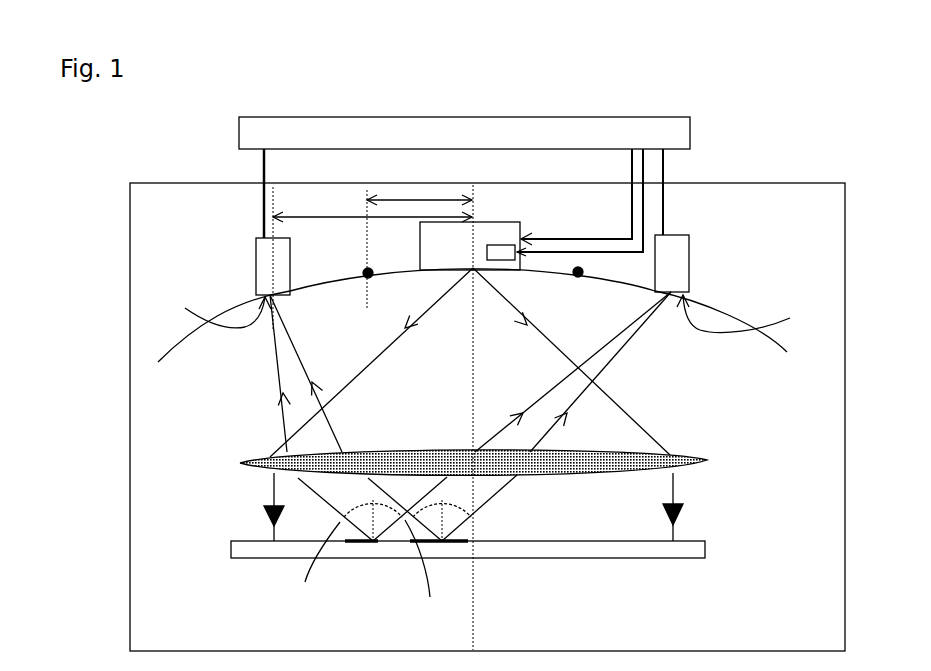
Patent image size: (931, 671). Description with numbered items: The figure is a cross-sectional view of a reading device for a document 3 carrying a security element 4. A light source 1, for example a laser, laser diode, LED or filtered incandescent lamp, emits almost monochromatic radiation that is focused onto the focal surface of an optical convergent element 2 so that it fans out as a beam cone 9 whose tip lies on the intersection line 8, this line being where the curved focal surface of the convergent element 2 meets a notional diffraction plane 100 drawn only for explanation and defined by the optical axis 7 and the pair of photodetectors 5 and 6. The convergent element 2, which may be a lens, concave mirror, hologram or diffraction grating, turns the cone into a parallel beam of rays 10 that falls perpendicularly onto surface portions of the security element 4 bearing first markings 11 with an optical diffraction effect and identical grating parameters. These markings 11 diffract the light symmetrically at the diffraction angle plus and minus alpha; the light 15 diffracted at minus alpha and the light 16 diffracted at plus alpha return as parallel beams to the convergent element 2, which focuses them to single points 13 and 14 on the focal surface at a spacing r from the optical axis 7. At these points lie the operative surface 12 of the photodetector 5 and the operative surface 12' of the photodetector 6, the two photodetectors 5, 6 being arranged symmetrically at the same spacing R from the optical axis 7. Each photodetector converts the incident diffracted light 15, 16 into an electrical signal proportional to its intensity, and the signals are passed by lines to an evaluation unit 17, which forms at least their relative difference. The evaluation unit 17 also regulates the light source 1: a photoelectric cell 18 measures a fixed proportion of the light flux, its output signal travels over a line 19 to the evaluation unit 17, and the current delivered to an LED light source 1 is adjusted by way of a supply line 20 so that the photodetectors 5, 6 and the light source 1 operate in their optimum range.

The light source 1 is at (527, 236).
The optical convergent element 2 is at (707, 459).
The document 3 is at (705, 546).
The security element 4 is at (455, 537).
The photodetector 5 is at (256, 273).
The photodetector 6 is at (689, 257).
The optical axis 7 is at (482, 209).
The intersection line 8 is at (724, 302).
The beam cone 9 is at (412, 316).
The parallel beam of rays 10 is at (268, 508).
The first markings 11 is at (442, 549).
The operative surface of the photodetector 12 is at (216, 312).
The operative surface of the photodetector 12' is at (747, 314).
The focal point 13 is at (364, 270).
The focal point 14 is at (580, 278).
The diffracted light 15 is at (385, 478).
The diffracted light 16 is at (592, 340).
The evaluation unit 17 is at (690, 118).
The photoelectric cell 18 is at (505, 261).
The line 19 is at (604, 254).
The supply line 20 is at (607, 240).
The diffraction plane 100 is at (183, 246).